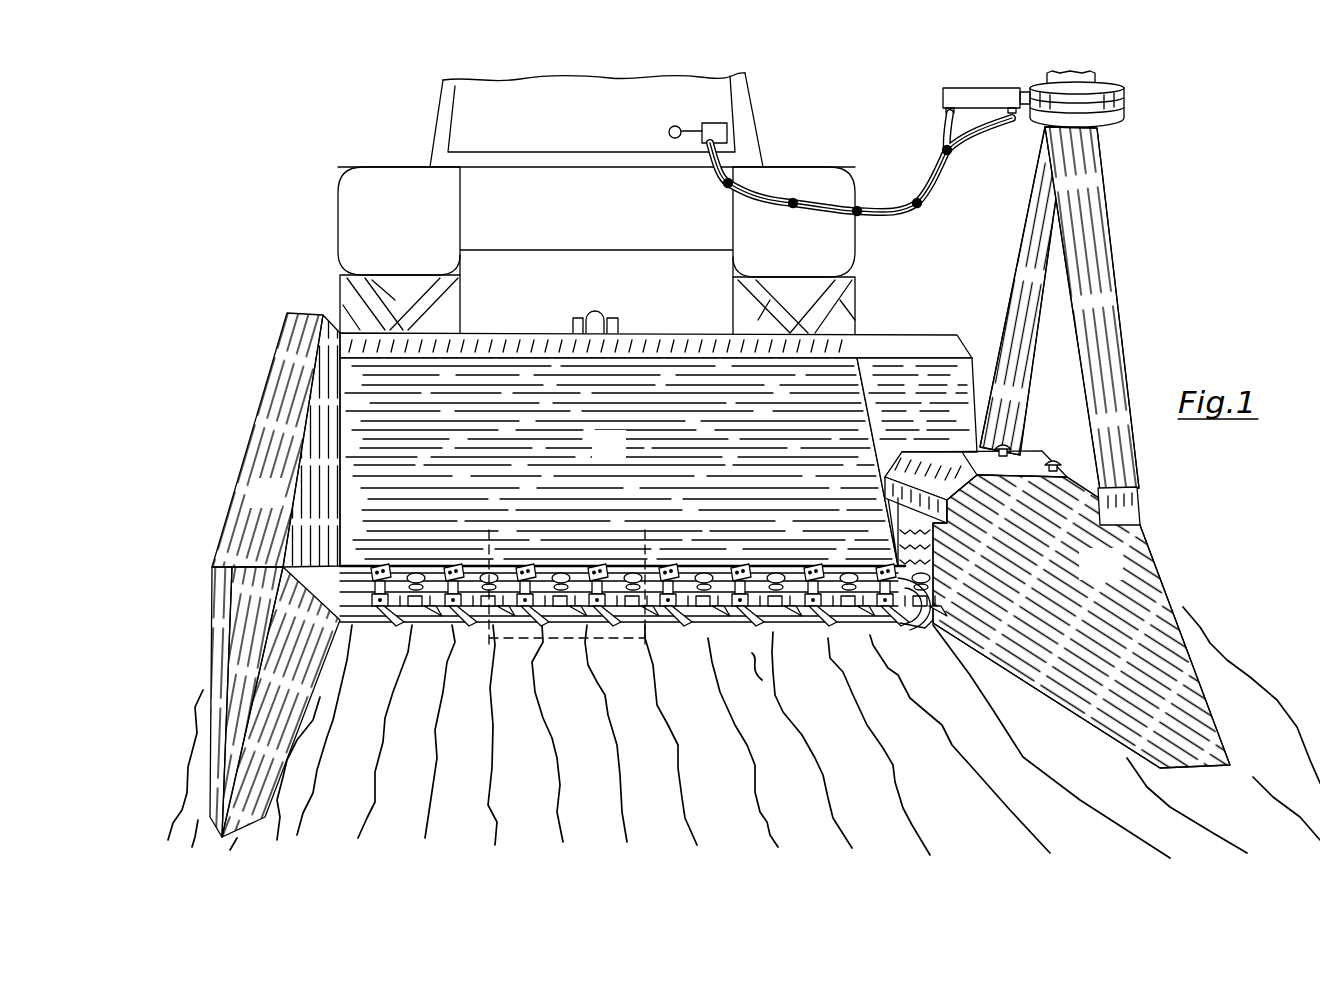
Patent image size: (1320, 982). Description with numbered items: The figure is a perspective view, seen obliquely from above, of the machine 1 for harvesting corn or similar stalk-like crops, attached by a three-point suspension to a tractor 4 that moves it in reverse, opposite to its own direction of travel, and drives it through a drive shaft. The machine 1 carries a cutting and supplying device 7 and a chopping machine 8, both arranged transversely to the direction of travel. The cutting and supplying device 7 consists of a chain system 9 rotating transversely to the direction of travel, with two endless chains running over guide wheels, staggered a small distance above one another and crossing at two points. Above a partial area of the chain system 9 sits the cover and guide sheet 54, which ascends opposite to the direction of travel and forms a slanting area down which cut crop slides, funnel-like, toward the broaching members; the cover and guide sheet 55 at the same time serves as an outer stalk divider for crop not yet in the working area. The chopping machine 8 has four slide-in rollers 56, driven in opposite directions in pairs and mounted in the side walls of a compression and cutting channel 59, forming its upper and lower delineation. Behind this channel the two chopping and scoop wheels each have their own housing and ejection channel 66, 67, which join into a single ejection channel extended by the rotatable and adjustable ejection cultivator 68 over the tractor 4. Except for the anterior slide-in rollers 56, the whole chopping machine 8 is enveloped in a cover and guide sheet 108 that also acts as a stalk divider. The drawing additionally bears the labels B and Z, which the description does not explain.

The machine 1 is at (1069, 419).
The tractor 4 is at (610, 221).
The cutting and supplying device 7 is at (616, 652).
The chopping machine 8 is at (1152, 507).
The chain system 9 is at (664, 582).
The cover and guide sheet 54 is at (622, 459).
The cover and guide sheet 55 is at (278, 506).
The slide-in rollers 56 is at (928, 560).
The compression and cutting channel 59 is at (920, 632).
The ejection channel 66 is at (1038, 204).
The ejection channel 67 is at (1103, 283).
The ejection cultivator 68 is at (1072, 92).
The cover and guide sheet 108 is at (1119, 578).
The working width B is at (715, 652).
The tine zone Z is at (569, 640).